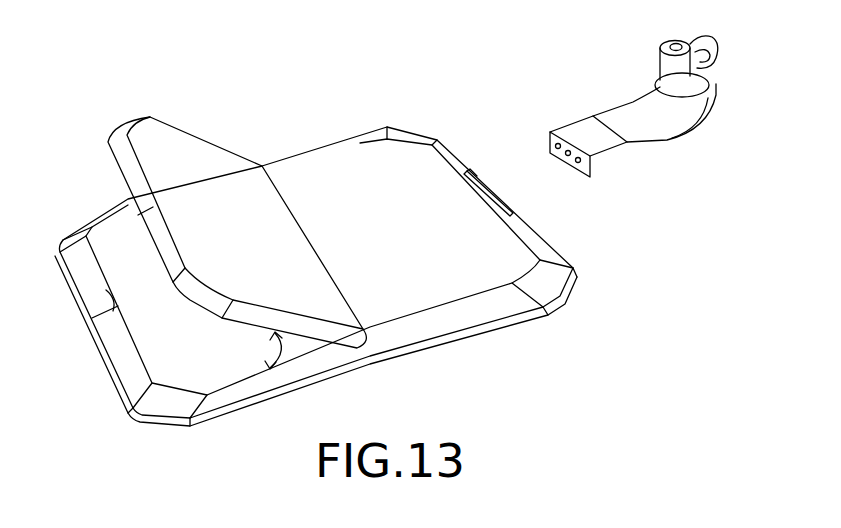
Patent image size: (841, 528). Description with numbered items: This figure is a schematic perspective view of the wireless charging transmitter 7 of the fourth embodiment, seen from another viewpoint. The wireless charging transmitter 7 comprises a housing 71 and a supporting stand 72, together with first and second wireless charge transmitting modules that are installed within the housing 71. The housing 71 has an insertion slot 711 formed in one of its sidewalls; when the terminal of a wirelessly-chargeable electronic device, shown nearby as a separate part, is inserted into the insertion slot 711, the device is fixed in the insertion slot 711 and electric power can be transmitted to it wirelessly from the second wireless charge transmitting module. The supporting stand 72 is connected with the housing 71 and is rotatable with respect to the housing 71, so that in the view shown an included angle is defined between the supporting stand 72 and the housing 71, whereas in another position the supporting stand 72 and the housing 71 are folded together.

The wireless charging transmitter 7 is at (372, 79).
The housing 71 is at (455, 282).
The supporting stand 72 is at (200, 155).
The insertion slot 711 is at (488, 190).